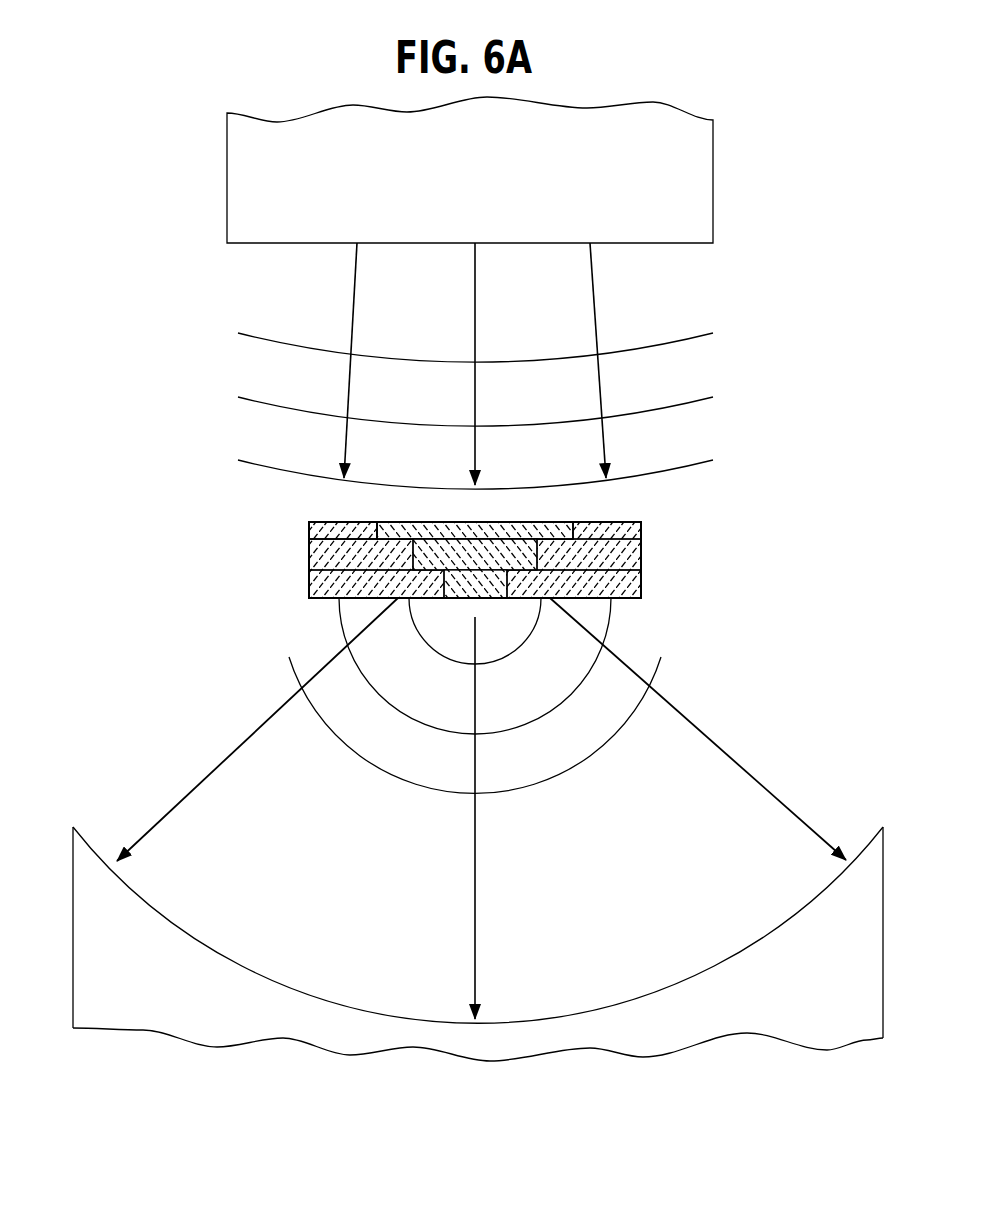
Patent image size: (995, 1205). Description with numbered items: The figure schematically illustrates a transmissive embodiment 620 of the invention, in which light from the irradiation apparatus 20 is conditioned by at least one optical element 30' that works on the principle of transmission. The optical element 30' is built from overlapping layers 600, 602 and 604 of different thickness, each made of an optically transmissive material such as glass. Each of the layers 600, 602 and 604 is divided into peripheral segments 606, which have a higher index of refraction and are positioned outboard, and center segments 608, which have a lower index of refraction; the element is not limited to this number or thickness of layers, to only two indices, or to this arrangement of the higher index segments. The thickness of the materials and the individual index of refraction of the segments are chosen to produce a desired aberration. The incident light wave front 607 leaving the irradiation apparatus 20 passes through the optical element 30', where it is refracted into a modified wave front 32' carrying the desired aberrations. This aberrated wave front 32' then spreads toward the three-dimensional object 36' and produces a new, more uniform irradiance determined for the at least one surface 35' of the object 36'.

The irradiation apparatus 20 is at (487, 180).
The transmissive embodiment 620 is at (520, 291).
The incident light wave front 607 is at (348, 375).
The peripheral segments 606 is at (325, 522).
The center segments 608 is at (470, 522).
The first layer 600 is at (644, 530).
The second layer 602 is at (644, 559).
The third layer 604 is at (644, 588).
The optical element 30' is at (490, 535).
The modified wave front 32' is at (481, 808).
The surface 35' is at (478, 925).
The 3D object 36' is at (452, 944).